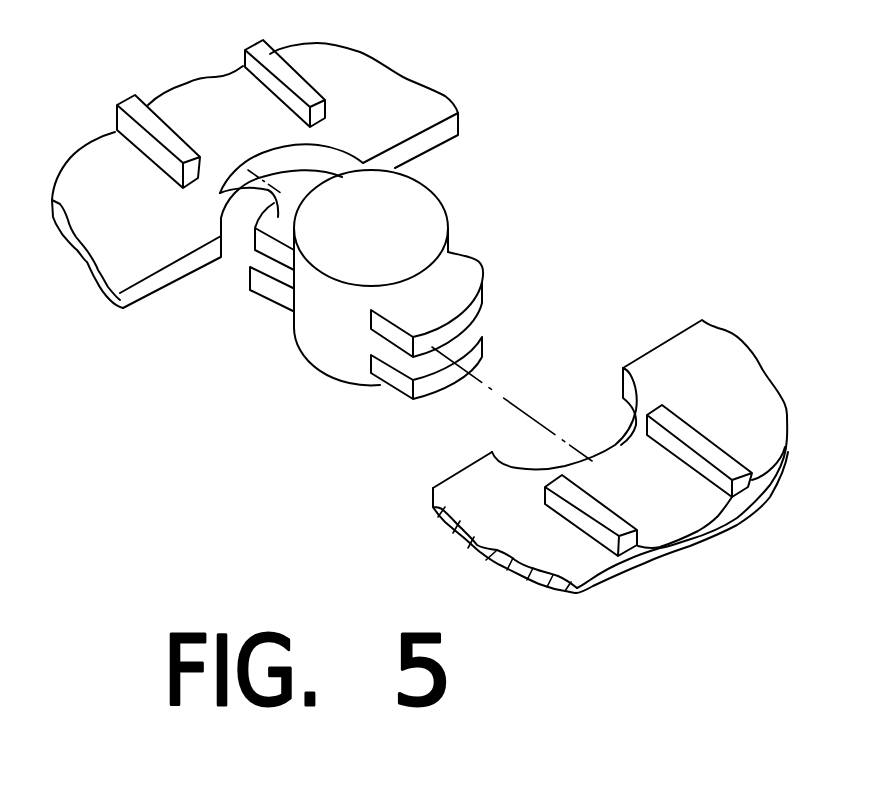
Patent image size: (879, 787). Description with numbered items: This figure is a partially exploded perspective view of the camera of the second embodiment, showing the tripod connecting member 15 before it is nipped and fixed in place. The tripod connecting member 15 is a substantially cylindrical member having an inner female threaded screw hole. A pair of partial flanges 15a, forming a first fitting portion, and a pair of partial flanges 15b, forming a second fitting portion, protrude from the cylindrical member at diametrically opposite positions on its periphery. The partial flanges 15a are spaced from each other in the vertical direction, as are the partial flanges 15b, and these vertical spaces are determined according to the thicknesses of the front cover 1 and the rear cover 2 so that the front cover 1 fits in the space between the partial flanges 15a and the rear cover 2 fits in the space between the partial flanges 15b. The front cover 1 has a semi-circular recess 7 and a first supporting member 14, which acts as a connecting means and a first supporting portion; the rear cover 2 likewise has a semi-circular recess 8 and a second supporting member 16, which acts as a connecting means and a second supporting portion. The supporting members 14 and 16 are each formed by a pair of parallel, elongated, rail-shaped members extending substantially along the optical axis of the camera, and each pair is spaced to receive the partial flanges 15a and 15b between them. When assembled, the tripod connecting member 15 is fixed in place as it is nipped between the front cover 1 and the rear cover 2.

The front cover 1 is at (378, 88).
The rear cover 2 is at (704, 338).
The semi-circular recess 7 is at (339, 127).
The semi-circular recess 8 is at (628, 440).
The first supporting member 14 is at (122, 68).
The tripod connecting member 15 is at (403, 210).
The partial flanges 15a is at (220, 194).
The partial flanges 15b is at (457, 290).
The second supporting member 16 is at (607, 518).